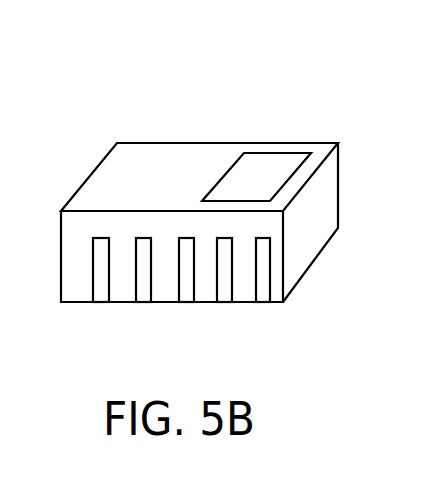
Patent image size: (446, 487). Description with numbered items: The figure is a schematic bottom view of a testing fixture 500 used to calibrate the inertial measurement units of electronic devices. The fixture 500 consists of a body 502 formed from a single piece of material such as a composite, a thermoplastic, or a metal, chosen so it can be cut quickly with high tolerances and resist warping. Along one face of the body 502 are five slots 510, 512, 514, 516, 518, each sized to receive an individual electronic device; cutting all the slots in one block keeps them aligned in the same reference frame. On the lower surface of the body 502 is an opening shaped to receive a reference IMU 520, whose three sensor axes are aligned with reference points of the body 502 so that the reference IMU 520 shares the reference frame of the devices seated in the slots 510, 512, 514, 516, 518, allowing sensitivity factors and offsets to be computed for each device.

The fixture 500 is at (199, 200).
The body 502 is at (108, 167).
The slot 510 is at (102, 285).
The slot 512 is at (142, 290).
The slot 514 is at (186, 282).
The slot 516 is at (226, 287).
The slot 518 is at (263, 293).
The reference IMU 520 is at (263, 172).